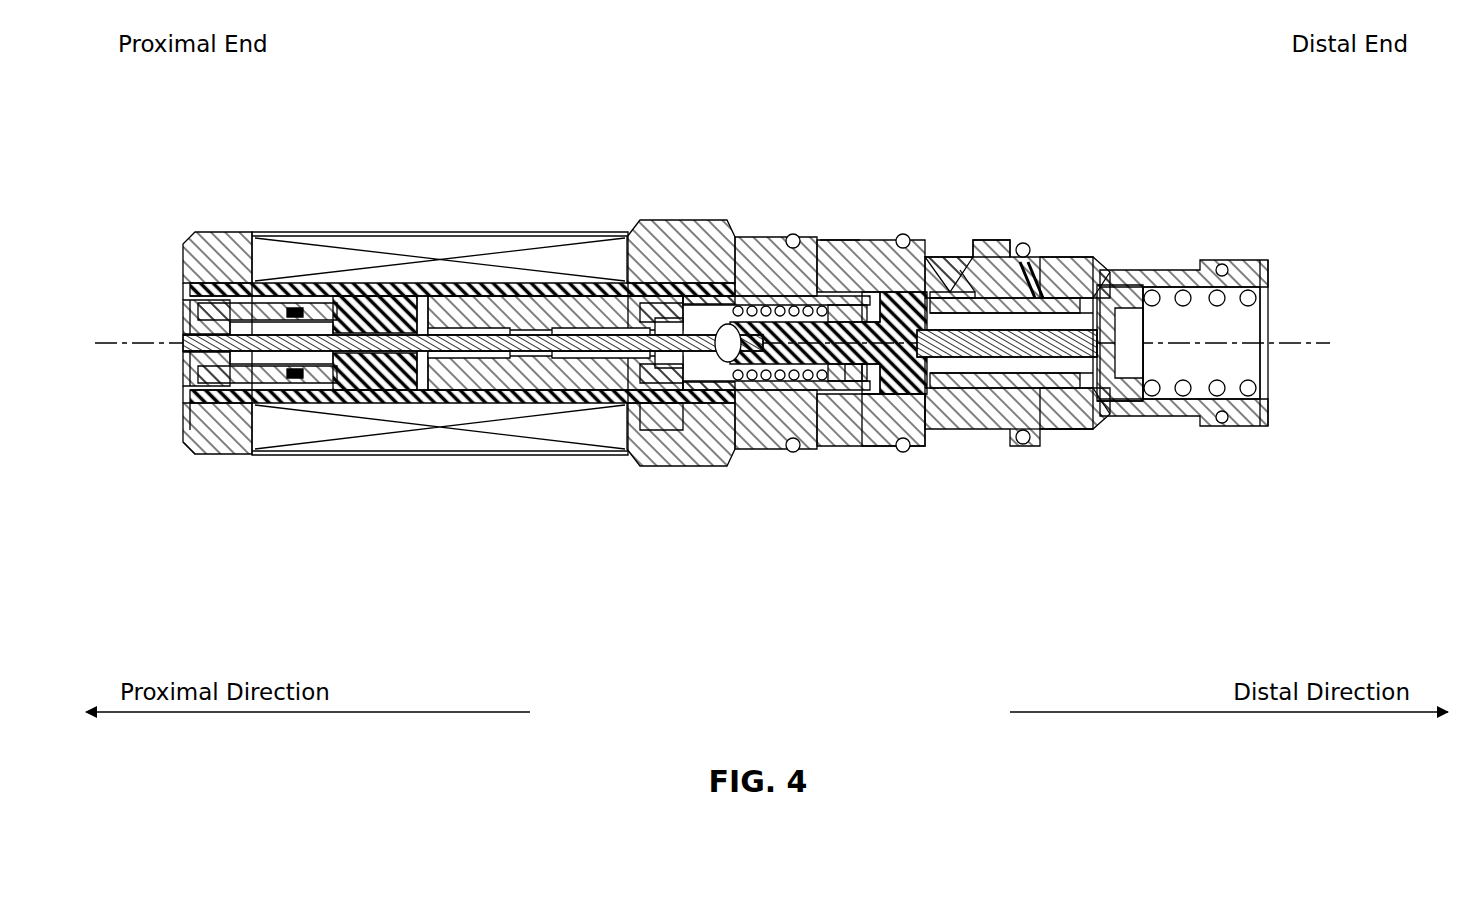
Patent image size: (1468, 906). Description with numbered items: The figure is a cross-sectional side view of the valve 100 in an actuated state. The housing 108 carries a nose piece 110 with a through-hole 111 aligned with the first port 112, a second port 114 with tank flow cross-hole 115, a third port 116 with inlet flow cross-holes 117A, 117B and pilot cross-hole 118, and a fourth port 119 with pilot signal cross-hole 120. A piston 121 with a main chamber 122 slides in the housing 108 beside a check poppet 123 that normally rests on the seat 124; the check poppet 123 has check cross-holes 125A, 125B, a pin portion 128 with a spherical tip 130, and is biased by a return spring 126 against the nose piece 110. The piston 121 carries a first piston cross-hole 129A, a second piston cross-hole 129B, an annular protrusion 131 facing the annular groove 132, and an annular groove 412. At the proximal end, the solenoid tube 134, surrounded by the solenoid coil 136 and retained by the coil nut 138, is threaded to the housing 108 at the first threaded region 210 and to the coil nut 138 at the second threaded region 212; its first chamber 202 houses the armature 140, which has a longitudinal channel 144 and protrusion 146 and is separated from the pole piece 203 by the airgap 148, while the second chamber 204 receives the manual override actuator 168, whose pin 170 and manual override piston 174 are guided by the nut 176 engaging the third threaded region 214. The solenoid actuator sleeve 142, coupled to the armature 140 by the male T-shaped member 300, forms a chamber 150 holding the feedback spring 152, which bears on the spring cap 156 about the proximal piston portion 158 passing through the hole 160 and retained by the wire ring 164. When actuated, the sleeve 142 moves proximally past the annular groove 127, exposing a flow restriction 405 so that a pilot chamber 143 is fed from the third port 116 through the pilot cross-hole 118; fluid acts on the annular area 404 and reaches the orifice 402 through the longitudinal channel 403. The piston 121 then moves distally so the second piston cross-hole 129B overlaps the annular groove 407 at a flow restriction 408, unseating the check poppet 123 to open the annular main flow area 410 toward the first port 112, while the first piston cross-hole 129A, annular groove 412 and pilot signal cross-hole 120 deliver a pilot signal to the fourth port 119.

The valve 100 is at (172, 160).
The housing 108 is at (692, 247).
The nose piece 110 is at (1262, 260).
The through-hole 111 is at (1272, 330).
The first port 112 is at (1264, 364).
The second port 114 is at (1187, 444).
The tank flow cross-hole 115 is at (1066, 432).
The third port 116 is at (952, 298).
The inlet flow cross-hole 117A is at (1005, 296).
The inlet flow cross-hole 117B is at (975, 431).
The pilot cross-hole 118 is at (920, 298).
The fourth port 119 is at (854, 230).
The pilot signal cross-hole 120 is at (878, 290).
The piston 121 is at (905, 402).
The main chamber 122 is at (1085, 404).
The check poppet 123 is at (1108, 404).
The seat 124 is at (1102, 300).
The check cross-hole 125A is at (1127, 300).
The check cross-hole 125B is at (1140, 404).
The return spring 126 is at (1219, 398).
The annular groove 127 is at (832, 250).
The pin portion 128 is at (945, 402).
The first piston cross-hole 129A is at (940, 296).
The second piston cross-hole 129B is at (972, 290).
The spherical tip 130 is at (930, 402).
The annular protrusion 131 is at (1070, 305).
The annular groove 132 is at (1062, 292).
The solenoid tube 134 is at (572, 296).
The solenoid coil 136 is at (492, 230).
The coil nut 138 is at (236, 228).
The armature 140 is at (612, 327).
The solenoid actuator sleeve 142 is at (830, 382).
The pilot chamber 143 is at (882, 398).
The longitudinal channel 144 is at (465, 392).
The protrusion 146 is at (540, 324).
The airgap 148 is at (420, 393).
The chamber 150 is at (672, 422).
The feedback spring 152 is at (772, 452).
The spring cap 156 is at (740, 298).
The proximal piston portion 158 is at (792, 306).
The hole 160 is at (828, 388).
The wire ring 164 is at (715, 400).
The manual override actuator 168 is at (178, 304).
The pin 170 is at (545, 392).
The manual override piston 174 is at (310, 302).
The nut 176 is at (331, 305).
The first chamber 202 is at (462, 301).
The pole piece 203 is at (375, 378).
The second chamber 204 is at (330, 392).
The first threaded region 210 is at (668, 305).
The second threaded region 212 is at (196, 301).
The third threaded region 214 is at (243, 407).
The male T-shaped member 300 is at (628, 407).
The orifice 402 is at (1015, 412).
The longitudinal channel 403 is at (1005, 434).
The annular area 404 is at (845, 385).
The flow restriction 405 is at (821, 343).
The annular groove 407 is at (1030, 288).
The flow restriction 408 is at (993, 326).
The annular main flow area 410 is at (1058, 351).
The annular groove 412 is at (905, 296).